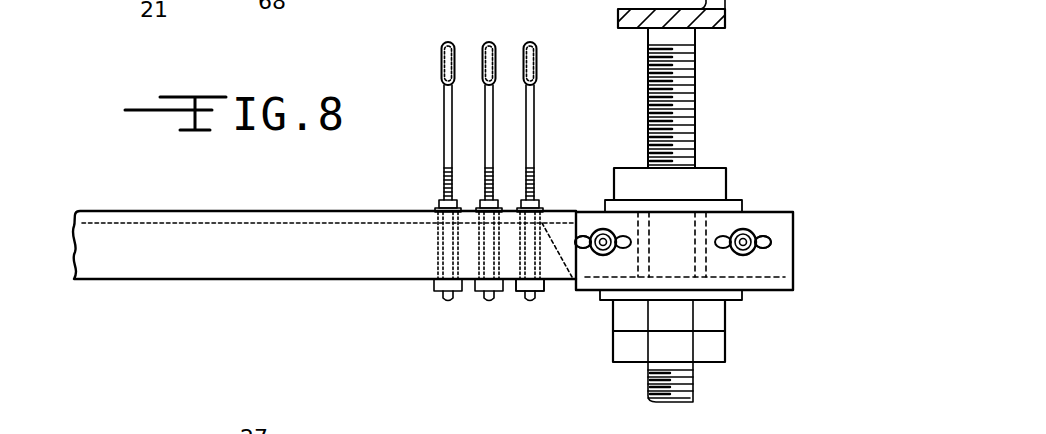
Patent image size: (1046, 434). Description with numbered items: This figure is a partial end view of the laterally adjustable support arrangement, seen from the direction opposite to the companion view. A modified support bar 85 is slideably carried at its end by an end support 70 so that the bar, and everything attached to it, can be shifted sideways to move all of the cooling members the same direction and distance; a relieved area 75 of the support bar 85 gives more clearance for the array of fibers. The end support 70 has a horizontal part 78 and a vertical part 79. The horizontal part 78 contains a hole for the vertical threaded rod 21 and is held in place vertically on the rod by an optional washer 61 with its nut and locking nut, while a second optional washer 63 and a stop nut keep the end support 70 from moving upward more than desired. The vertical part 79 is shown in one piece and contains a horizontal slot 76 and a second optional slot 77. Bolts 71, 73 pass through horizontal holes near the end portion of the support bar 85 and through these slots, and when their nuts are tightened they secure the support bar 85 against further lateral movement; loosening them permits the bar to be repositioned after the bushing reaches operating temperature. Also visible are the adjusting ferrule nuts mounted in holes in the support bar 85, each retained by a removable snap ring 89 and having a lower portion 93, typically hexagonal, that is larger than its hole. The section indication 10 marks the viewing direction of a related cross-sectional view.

The section line / viewing direction 10 is at (449, 318).
The threaded rod 21 is at (681, 389).
The washer 61 is at (742, 300).
The second washer 63 is at (746, 200).
The end support 70 is at (785, 265).
The bolt 71 is at (591, 222).
The bolt 73 is at (757, 252).
The relieved area 75 is at (525, 433).
The horizontal slot 76 is at (586, 213).
The second slot 77 is at (766, 237).
The horizontal part 78 is at (582, 291).
The vertical part 79 is at (757, 225).
The support bar 85 is at (108, 211).
The snap ring 89 is at (460, 203).
The lower portion 93 is at (540, 287).